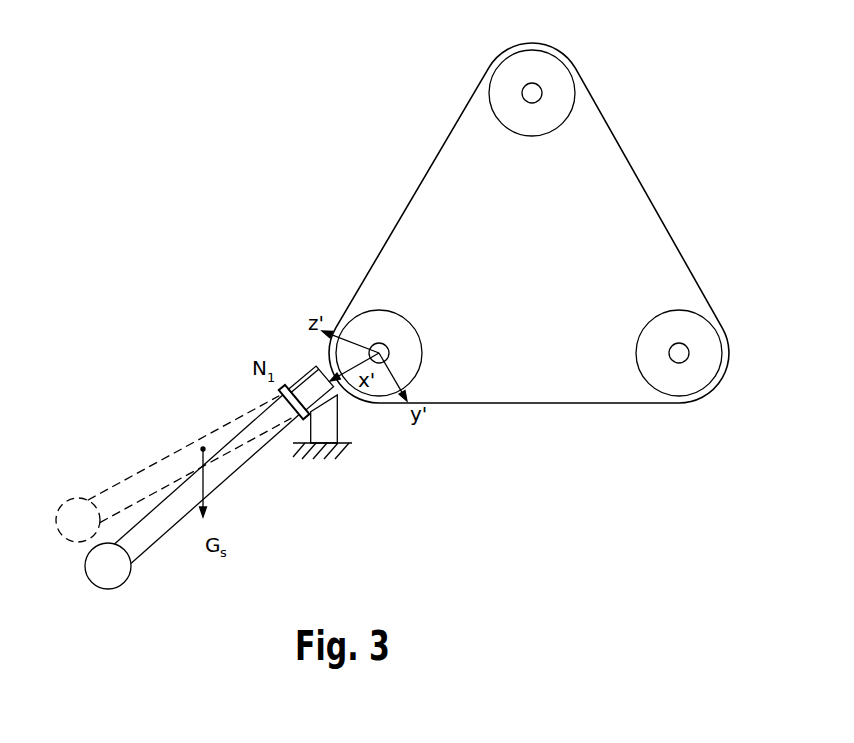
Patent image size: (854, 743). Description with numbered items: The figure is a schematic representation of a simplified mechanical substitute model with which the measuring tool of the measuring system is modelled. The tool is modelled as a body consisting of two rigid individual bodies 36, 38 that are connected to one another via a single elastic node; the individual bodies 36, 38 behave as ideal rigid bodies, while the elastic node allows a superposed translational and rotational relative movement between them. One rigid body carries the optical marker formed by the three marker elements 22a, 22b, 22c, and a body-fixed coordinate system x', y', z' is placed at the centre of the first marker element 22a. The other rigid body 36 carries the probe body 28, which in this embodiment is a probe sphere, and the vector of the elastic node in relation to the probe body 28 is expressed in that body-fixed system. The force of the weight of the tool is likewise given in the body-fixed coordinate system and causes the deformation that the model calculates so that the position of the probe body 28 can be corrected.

The first marker element 22a is at (413, 350).
The marker element 22b is at (560, 78).
The marker element 22c is at (680, 387).
The probe body 28 is at (110, 577).
The rigid individual body 36 is at (242, 452).
The rigid individual body 38 is at (308, 378).